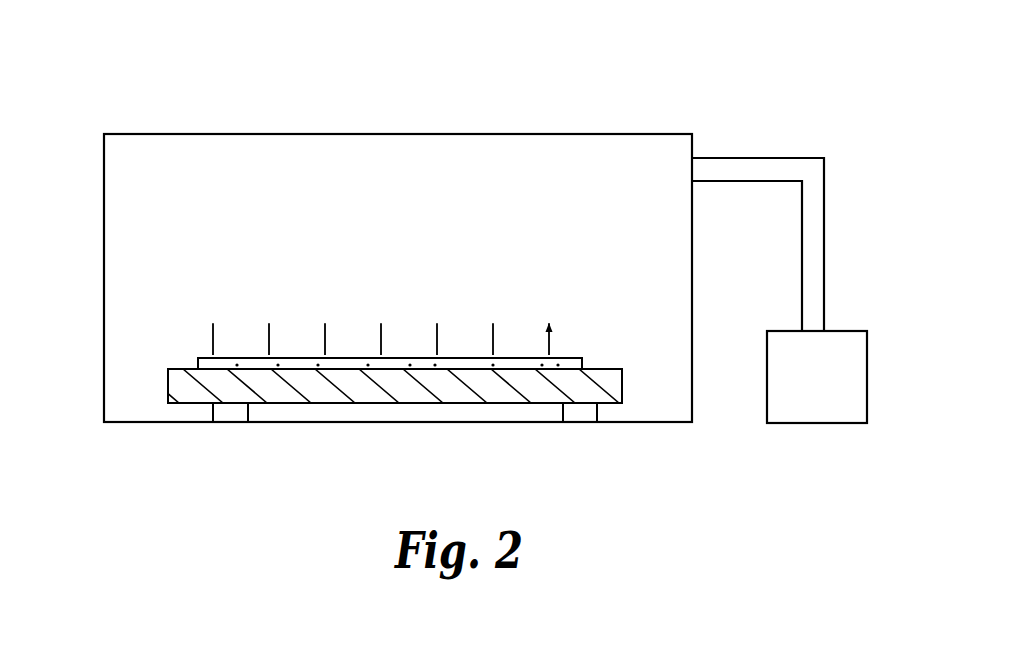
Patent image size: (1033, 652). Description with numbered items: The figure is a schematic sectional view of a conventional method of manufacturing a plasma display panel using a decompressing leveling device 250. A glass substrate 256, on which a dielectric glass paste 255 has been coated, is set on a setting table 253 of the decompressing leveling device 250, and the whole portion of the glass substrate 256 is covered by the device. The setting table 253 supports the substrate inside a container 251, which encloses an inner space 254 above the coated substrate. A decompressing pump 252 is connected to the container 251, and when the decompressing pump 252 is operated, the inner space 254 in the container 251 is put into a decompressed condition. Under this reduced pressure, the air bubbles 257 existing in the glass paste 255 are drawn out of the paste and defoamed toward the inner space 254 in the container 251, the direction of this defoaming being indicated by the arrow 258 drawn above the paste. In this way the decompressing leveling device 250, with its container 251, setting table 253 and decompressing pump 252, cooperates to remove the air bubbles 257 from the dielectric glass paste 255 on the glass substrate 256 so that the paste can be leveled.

The decompressing leveling device 250 is at (536, 110).
The container 251 is at (353, 133).
The decompressing pump 252 is at (847, 330).
The setting table 253 is at (230, 415).
The inner space 254 is at (216, 170).
The dielectric glass paste 255 is at (197, 362).
The glass substrate 256 is at (155, 377).
The air bubbles 257 is at (558, 366).
The arrow 258 is at (557, 321).